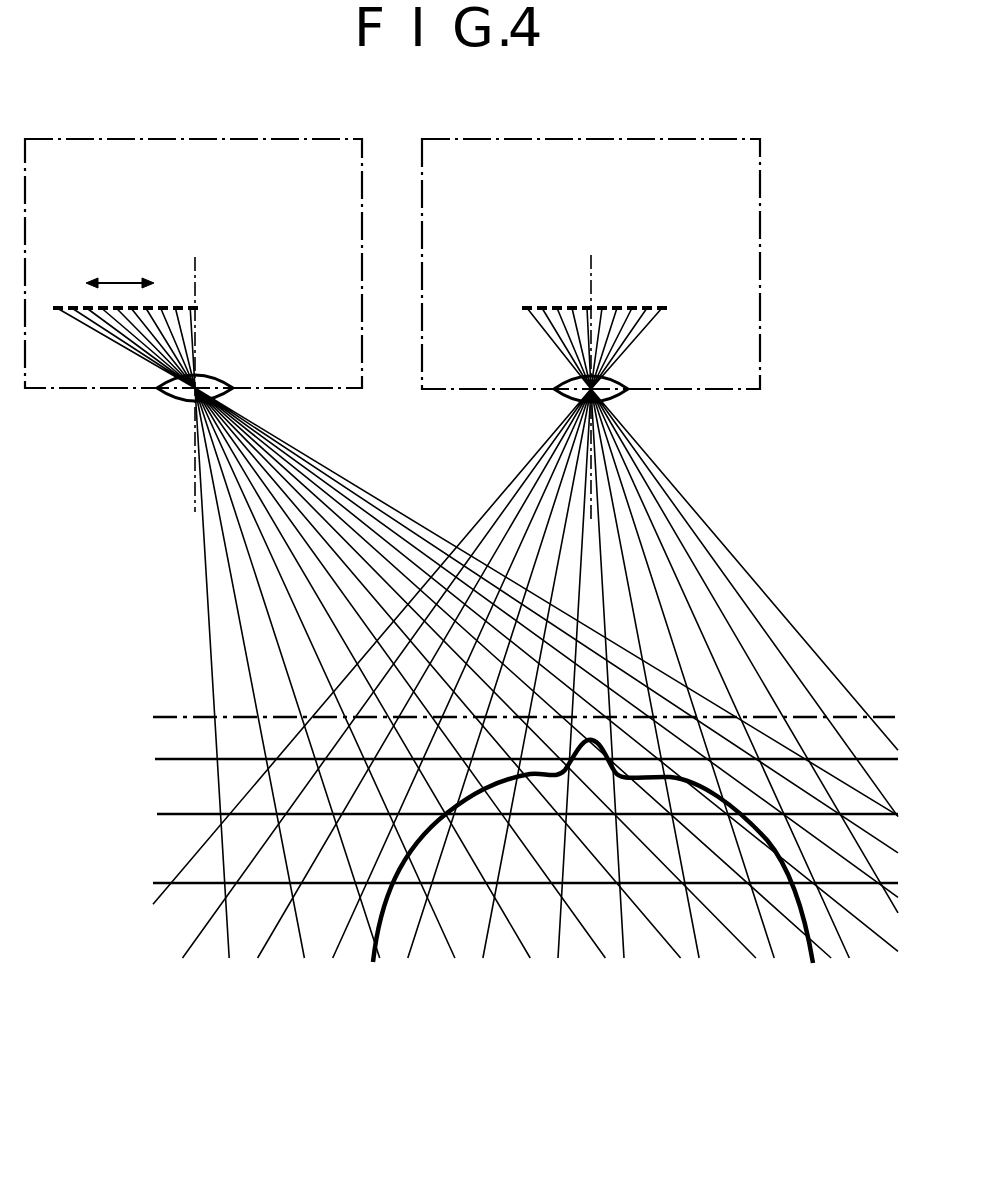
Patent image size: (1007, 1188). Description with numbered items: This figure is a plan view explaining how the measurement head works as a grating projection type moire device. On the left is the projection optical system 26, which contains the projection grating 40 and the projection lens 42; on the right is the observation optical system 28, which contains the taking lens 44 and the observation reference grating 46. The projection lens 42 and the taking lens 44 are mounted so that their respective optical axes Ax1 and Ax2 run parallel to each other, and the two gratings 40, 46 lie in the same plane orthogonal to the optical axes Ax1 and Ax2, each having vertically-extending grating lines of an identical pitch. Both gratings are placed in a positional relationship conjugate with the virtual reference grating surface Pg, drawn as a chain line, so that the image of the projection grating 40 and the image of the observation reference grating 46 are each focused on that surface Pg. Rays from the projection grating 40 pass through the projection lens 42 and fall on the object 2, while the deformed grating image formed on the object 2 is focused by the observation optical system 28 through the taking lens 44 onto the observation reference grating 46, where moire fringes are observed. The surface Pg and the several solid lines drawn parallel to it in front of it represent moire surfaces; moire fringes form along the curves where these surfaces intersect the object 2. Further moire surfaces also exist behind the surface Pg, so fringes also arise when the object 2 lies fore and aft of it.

The projection optical system 26 is at (300, 137).
The observation optical system 28 is at (643, 137).
The projection grating 40 is at (60, 306).
The projection lens 42 is at (167, 400).
The taking lens 44 is at (612, 397).
The observation reference grating 46 is at (525, 306).
The optical axis Ax1 is at (197, 290).
The optical axis Ax2 is at (593, 290).
The virtual reference grating surface Pg is at (165, 713).
The object 2 is at (812, 918).